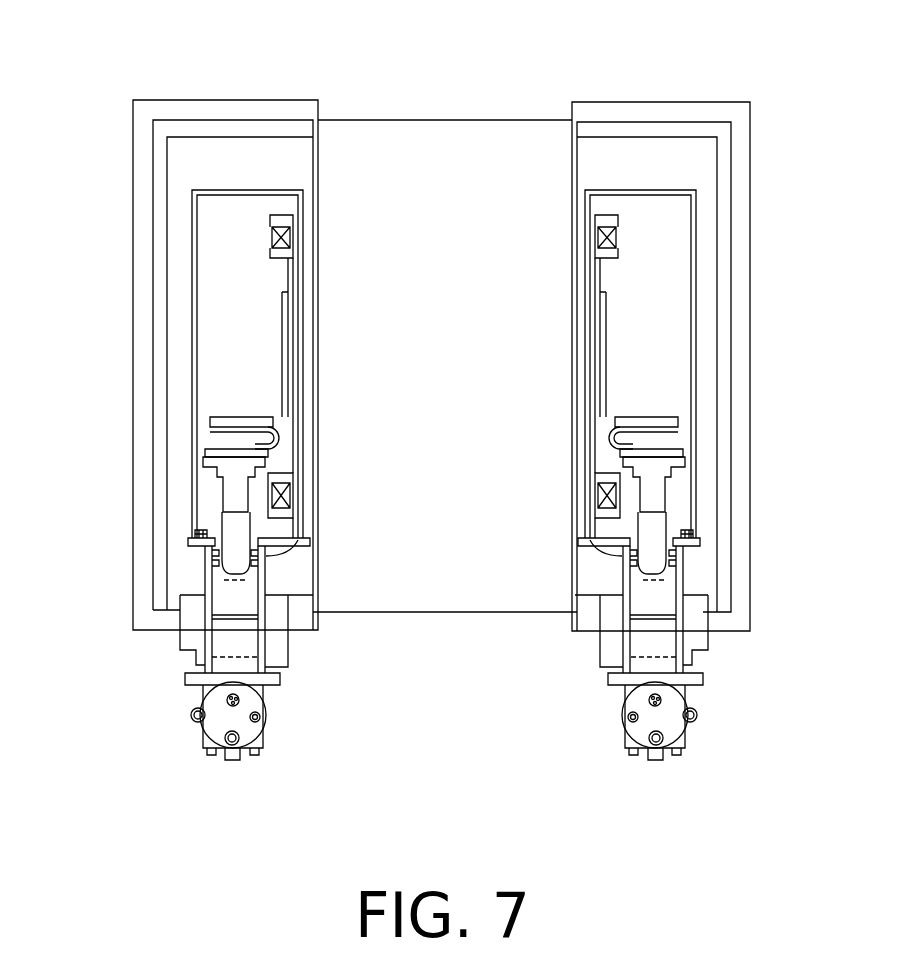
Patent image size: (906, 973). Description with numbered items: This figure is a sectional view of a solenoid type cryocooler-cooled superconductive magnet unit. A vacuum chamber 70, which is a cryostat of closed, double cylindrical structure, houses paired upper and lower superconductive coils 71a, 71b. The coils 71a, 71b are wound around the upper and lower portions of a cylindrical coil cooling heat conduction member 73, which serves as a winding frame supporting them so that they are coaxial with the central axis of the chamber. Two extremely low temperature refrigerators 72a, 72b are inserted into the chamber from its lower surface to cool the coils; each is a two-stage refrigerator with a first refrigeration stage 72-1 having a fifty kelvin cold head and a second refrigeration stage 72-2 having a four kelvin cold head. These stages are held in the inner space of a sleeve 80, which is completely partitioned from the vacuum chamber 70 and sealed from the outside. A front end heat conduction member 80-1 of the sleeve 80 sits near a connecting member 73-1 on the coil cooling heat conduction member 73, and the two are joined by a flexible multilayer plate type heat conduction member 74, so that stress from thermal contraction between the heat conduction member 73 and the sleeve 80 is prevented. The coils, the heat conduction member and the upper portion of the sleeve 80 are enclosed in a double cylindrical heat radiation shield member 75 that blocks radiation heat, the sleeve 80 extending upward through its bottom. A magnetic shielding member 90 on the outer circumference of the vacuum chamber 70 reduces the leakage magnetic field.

The magnetic shielding member 90 is at (153, 90).
The vacuum chamber 70 is at (565, 135).
The heat radiation shield member 75 is at (263, 186).
The upper superconductive coil 71a is at (297, 237).
The lower superconductive coil 71b is at (293, 496).
The coil cooling heat conduction member 73 is at (294, 378).
The connecting member 73-1 is at (235, 418).
The flexible multilayer plate type heat conduction member 74 is at (281, 436).
The front end heat conduction member 80-1 is at (225, 460).
The second refrigeration stage 72-2 is at (235, 495).
The first refrigeration stage 72-1 is at (227, 603).
The sleeve 80 is at (298, 625).
The refrigerator 72a is at (177, 716).
The refrigerator 72b is at (693, 716).